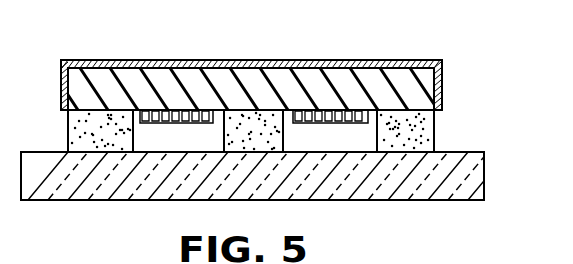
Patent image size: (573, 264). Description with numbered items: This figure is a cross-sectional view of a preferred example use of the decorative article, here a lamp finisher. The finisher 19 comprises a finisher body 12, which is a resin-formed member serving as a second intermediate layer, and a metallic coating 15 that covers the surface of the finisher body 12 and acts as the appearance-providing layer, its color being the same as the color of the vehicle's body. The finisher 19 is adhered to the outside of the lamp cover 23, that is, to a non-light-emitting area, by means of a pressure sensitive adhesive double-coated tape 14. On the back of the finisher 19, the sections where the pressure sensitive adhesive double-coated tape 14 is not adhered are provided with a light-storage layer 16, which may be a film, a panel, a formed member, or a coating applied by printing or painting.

The finisher body 12 is at (427, 92).
The pressure sensitive adhesive double-coated tape 14 is at (427, 128).
The metallic coating 15 is at (422, 62).
The light-storage layer 16 is at (337, 110).
The finisher 19 is at (299, 63).
The lamp cover 23 is at (477, 182).